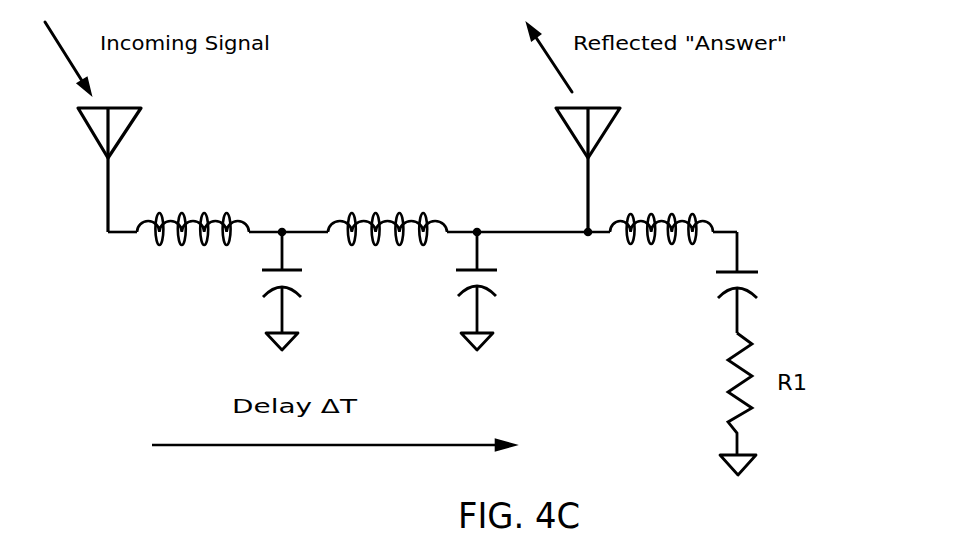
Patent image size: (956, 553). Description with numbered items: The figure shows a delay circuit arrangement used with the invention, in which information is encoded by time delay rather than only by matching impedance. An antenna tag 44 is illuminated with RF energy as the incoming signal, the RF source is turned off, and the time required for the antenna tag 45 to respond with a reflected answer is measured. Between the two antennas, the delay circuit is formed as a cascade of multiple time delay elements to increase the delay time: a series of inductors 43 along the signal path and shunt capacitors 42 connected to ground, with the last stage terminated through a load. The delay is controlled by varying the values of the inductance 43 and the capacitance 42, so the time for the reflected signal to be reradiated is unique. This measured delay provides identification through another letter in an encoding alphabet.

The antenna tag 44 is at (150, 121).
The antenna tag 45 is at (628, 119).
The inductance 43 is at (182, 245).
The capacitance 42 is at (267, 297).